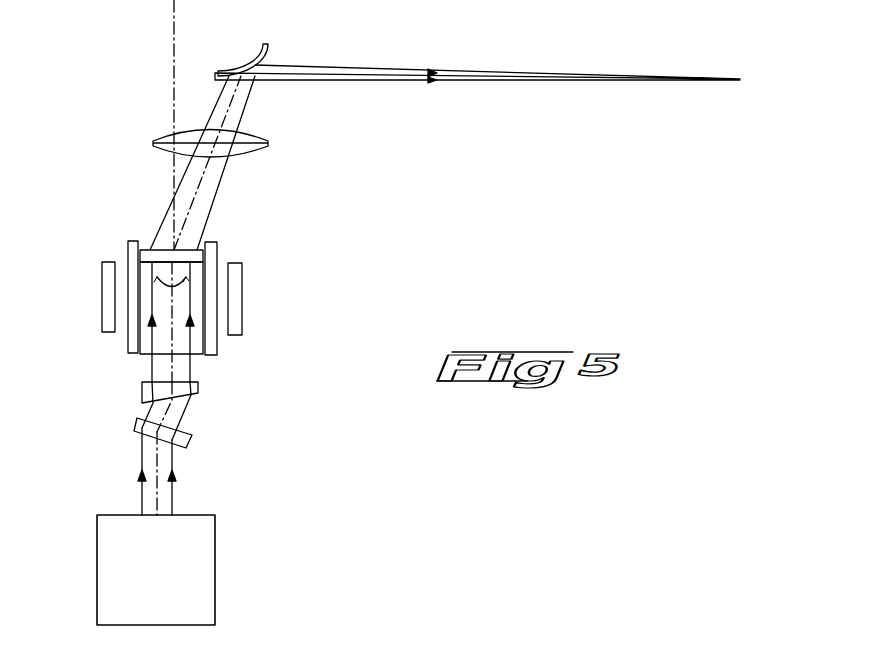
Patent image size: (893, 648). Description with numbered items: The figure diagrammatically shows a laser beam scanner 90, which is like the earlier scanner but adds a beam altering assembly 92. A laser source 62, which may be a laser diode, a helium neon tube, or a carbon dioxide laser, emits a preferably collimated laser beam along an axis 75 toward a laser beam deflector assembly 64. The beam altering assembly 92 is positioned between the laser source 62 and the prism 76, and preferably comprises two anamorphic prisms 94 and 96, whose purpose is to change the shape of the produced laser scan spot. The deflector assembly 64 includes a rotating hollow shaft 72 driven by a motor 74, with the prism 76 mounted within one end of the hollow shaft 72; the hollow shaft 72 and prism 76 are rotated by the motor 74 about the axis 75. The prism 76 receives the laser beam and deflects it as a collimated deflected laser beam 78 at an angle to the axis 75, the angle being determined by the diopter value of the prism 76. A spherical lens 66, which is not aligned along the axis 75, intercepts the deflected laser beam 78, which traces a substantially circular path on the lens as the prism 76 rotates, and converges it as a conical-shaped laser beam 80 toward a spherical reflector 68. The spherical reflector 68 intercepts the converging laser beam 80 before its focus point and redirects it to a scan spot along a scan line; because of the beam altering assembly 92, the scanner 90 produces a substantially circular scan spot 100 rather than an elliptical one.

The laser source 62 is at (212, 550).
The laser beam deflector assembly 64 is at (242, 354).
The spherical lens 66 is at (240, 157).
The spherical reflector 68 is at (268, 50).
The rotating hollow shaft 72 is at (133, 347).
The motor 74 is at (108, 305).
The axis 75 is at (172, 73).
The prism 76 is at (195, 247).
The deflected laser beam 78 is at (183, 176).
The converging laser beam 80 is at (248, 100).
The laser beam scanner 90 is at (402, 199).
The beam altering assembly 92 is at (168, 429).
The anamorphic prism 94 is at (142, 393).
The anamorphic prism 96 is at (137, 423).
The scan spot 100 is at (740, 80).